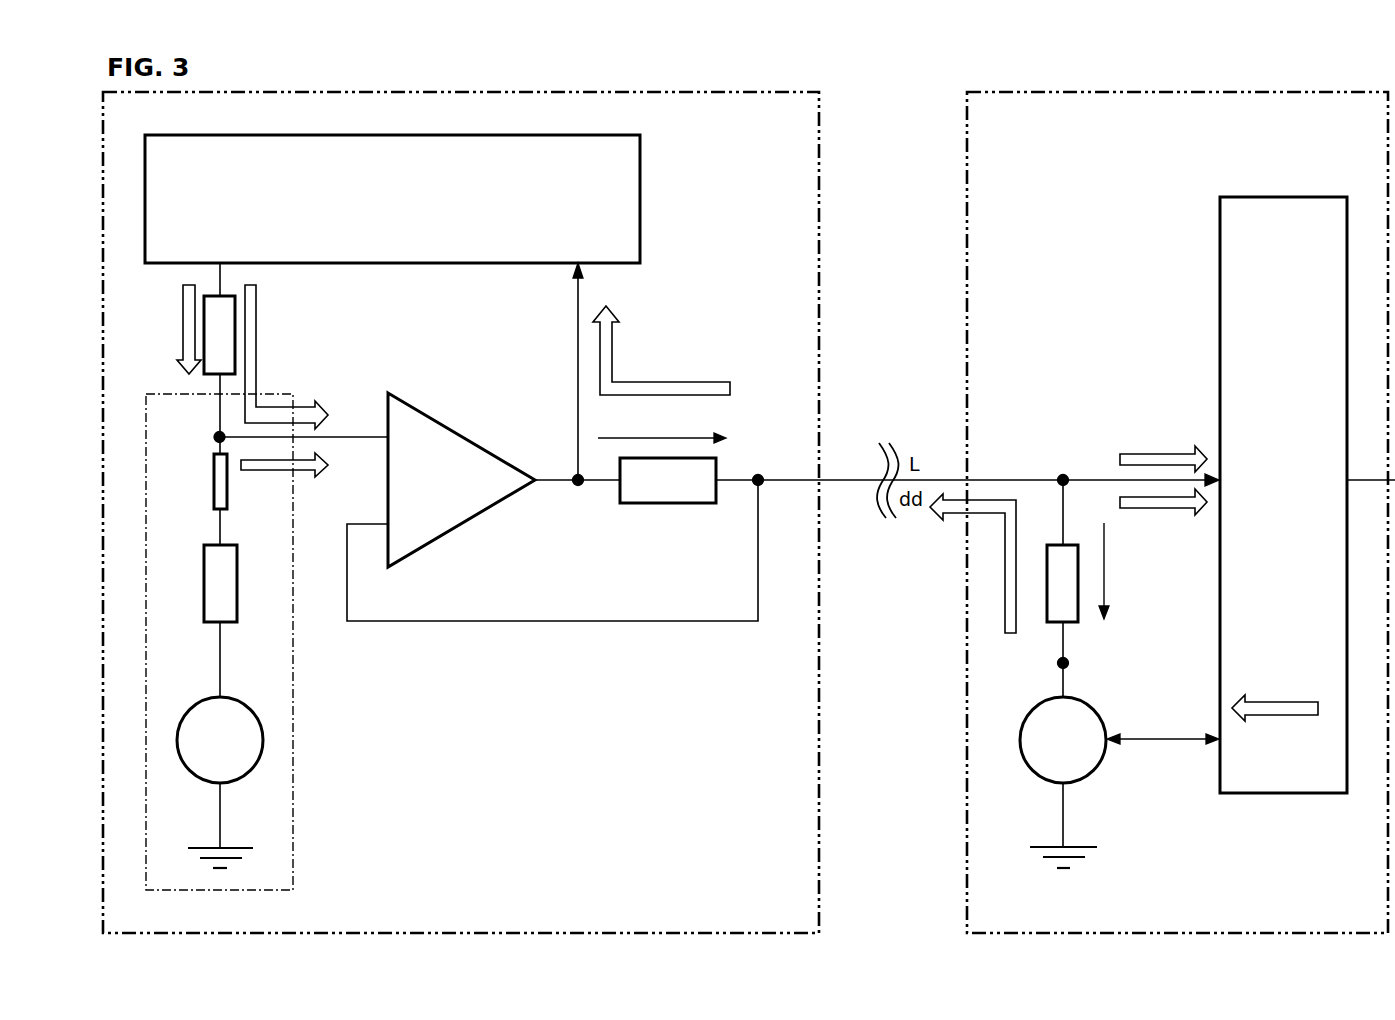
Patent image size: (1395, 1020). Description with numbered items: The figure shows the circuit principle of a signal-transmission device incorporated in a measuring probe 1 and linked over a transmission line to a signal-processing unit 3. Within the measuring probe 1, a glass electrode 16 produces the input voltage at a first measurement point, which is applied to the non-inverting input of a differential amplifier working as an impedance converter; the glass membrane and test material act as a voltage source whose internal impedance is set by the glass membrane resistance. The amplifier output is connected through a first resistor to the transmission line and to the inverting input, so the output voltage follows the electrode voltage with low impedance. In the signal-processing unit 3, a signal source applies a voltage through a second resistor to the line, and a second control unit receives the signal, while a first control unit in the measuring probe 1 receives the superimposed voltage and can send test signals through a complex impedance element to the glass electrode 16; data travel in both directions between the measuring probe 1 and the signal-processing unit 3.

The measuring probe 1 is at (461, 512).
The signal-processing unit 3 is at (1181, 512).
The glass electrode 16 is at (202, 481).